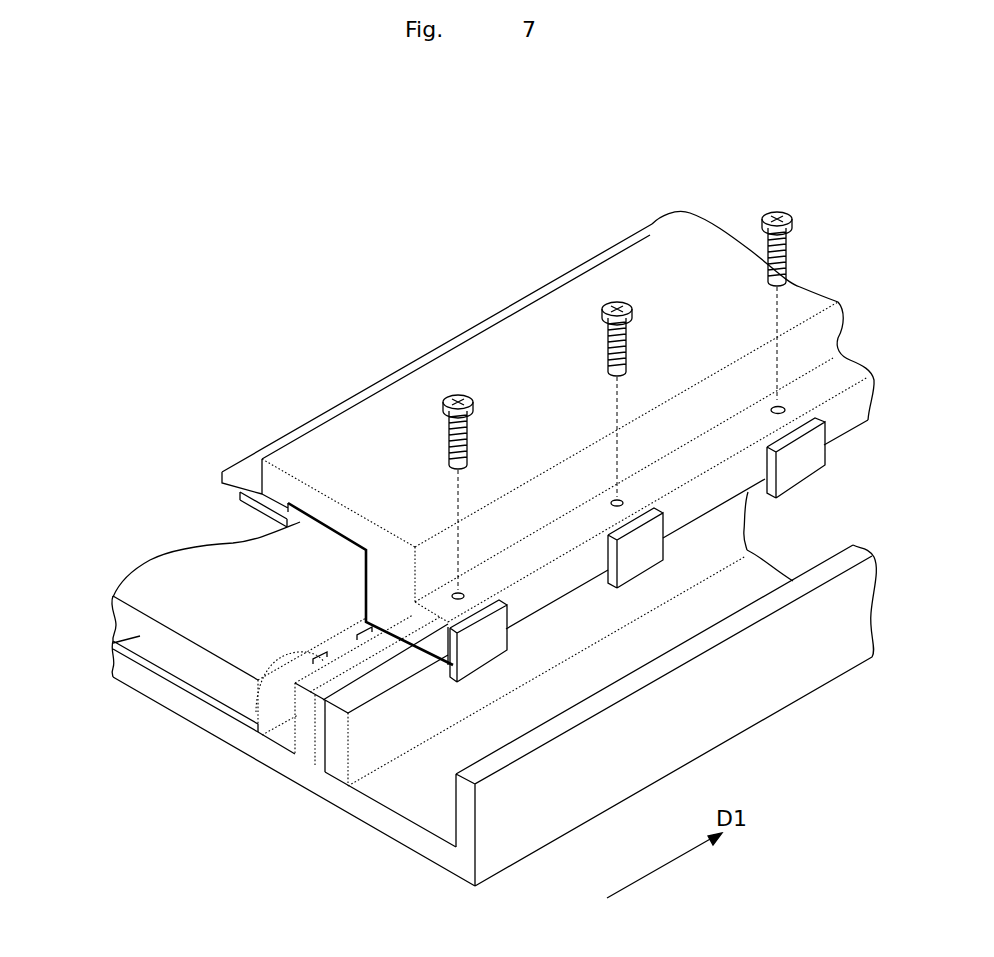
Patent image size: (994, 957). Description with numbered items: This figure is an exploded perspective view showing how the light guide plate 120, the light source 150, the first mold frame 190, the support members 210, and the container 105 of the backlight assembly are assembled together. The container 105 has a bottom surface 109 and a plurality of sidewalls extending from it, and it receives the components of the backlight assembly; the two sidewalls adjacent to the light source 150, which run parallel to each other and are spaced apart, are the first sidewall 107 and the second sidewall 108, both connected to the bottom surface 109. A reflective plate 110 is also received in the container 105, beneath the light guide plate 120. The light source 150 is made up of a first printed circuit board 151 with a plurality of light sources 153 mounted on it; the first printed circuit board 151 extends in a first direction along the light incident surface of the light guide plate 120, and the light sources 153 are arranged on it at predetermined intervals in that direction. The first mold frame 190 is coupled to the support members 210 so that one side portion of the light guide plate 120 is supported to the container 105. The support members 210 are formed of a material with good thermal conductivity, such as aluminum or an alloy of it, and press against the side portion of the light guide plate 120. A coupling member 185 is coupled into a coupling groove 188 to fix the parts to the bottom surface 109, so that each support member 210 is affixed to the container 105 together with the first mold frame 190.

The container 105 is at (494, 699).
The first sidewall 107 is at (463, 828).
The second sidewall 108 is at (505, 669).
The bottom surface 109 is at (393, 822).
The reflective plate 110 is at (172, 680).
The light guide plate 120 is at (113, 645).
The light source 150 is at (296, 721).
The first printed circuit board 151 is at (303, 740).
The light sources 153 is at (268, 682).
The coupling member 185 is at (777, 211).
The coupling groove 188 is at (779, 411).
The first mold frame 190 is at (521, 446).
The support members 210 is at (262, 511).